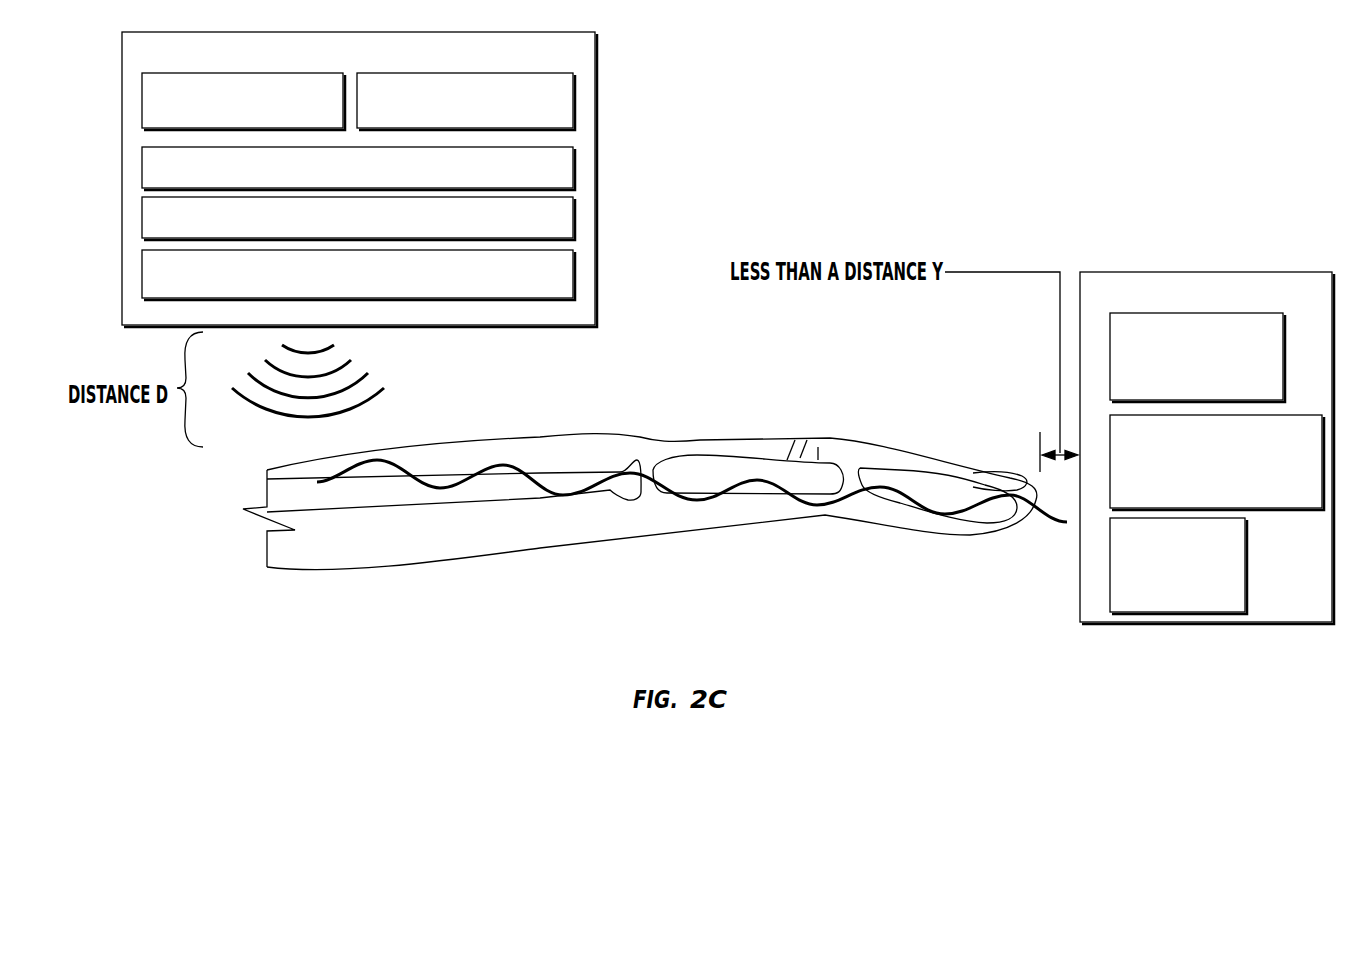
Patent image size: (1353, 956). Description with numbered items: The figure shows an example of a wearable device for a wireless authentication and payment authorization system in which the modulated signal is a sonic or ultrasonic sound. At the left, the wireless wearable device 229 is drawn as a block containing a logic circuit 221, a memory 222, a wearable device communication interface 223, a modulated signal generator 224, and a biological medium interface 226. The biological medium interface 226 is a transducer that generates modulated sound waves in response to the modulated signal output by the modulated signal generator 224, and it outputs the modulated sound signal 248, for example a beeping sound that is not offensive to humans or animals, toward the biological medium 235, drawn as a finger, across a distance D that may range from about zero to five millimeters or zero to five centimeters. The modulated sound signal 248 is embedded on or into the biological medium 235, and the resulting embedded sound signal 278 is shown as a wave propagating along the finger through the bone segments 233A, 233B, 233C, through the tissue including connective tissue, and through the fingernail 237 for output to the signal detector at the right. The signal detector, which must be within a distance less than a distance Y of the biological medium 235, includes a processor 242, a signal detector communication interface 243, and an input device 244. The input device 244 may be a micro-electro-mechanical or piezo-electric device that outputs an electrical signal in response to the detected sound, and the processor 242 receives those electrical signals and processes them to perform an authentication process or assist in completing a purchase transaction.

The wireless wearable device 229 is at (498, 66).
The logic circuit 221 is at (322, 119).
The memory 222 is at (523, 119).
The wearable device communication interface 223 is at (537, 187).
The modulated signal generator 224 is at (517, 234).
The biological medium interface 226 is at (515, 292).
The modulated sound signal 248 is at (434, 377).
The biological medium 235 is at (684, 427).
The fingernail 237 is at (1005, 470).
The bone segment 233A is at (332, 501).
The bone segment 233B is at (775, 493).
The bone segment 233C is at (990, 631).
The embedded sound signal 278 is at (603, 632).
The processor 242 is at (1263, 372).
The signal detector communication interface 243 is at (1278, 497).
The input device 244 is at (1195, 594).